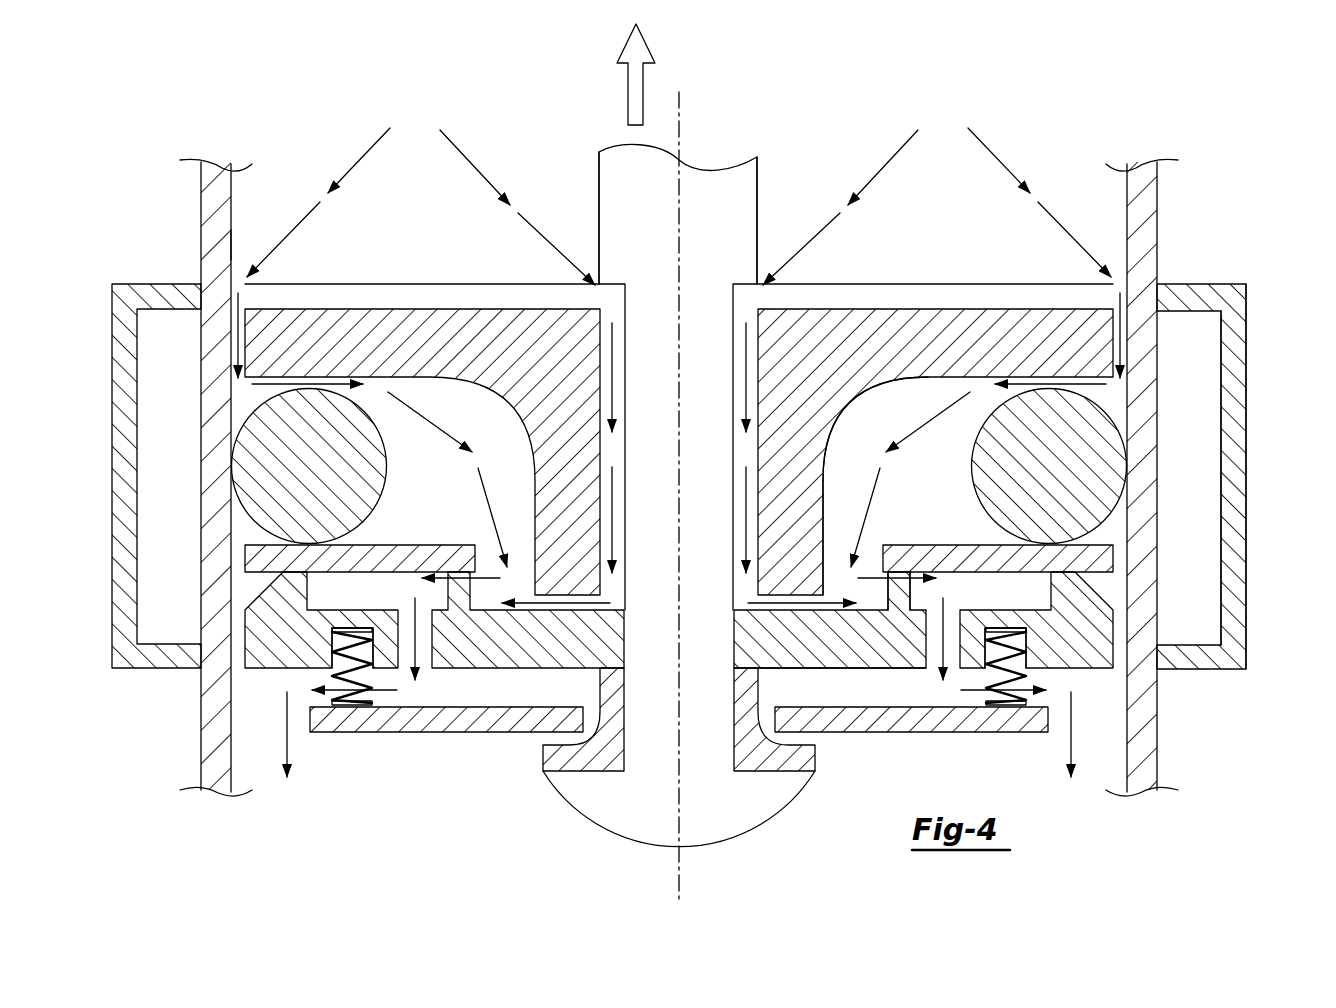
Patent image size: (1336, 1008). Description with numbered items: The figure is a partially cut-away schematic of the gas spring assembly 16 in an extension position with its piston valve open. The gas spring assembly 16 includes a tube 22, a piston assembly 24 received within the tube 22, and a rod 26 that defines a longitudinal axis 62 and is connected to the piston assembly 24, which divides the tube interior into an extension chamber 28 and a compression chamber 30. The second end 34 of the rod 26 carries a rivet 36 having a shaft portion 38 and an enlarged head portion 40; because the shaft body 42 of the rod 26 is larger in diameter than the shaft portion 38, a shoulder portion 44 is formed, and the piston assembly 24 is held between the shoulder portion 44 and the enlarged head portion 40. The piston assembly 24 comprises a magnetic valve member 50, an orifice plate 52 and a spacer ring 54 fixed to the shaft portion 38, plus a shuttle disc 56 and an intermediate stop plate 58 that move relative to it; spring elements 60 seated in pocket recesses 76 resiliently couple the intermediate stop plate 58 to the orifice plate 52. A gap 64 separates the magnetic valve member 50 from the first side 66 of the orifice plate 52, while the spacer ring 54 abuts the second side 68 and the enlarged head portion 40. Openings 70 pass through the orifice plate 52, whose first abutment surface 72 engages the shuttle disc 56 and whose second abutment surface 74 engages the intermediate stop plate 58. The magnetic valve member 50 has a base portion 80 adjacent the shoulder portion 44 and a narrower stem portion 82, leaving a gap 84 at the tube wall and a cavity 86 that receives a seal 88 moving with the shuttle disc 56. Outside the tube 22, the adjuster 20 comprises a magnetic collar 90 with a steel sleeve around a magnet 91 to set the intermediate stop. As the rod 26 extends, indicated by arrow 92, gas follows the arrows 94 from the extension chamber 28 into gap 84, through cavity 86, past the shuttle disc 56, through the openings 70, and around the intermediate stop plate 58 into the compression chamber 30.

The gas spring assembly 16 is at (210, 150).
The adjuster 20 is at (1263, 345).
The tube 22 is at (215, 197).
The piston assembly 24 is at (551, 215).
The rod 26 is at (690, 180).
The extension chamber 28 is at (235, 240).
The compression chamber 30 is at (1108, 727).
The second end 34 is at (722, 205).
The rivet 36 is at (622, 837).
The shaft portion 38 is at (775, 440).
The enlarged head portion 40 is at (575, 790).
The shaft body 42 is at (757, 173).
The shoulder portion 44 is at (745, 283).
The magnetic valve member 50 is at (428, 323).
The orifice plate 52 is at (877, 663).
The spacer ring 54 is at (803, 755).
The shuttle disc 56 is at (1102, 575).
The intermediate stop plate 58 is at (1010, 723).
The spring element 60 is at (368, 705).
The longitudinal axis 62 is at (683, 882).
The gap 64 is at (805, 597).
The first side 66 is at (863, 660).
The second side 68 is at (843, 672).
The openings 70 is at (430, 660).
The first abutment surface 72 is at (1062, 562).
The second abutment surface 74 is at (493, 668).
The pocket recesses 76 is at (330, 672).
The base portion 80 is at (1068, 328).
The stem portion 82 is at (808, 505).
The gap 84 is at (1125, 285).
The cavity 86 is at (952, 390).
The seal 88 is at (1100, 438).
The magnetic collar 90 is at (1240, 370).
The magnet 91 is at (1193, 490).
The arrow 92 is at (628, 97).
The arrows 94 is at (450, 142).